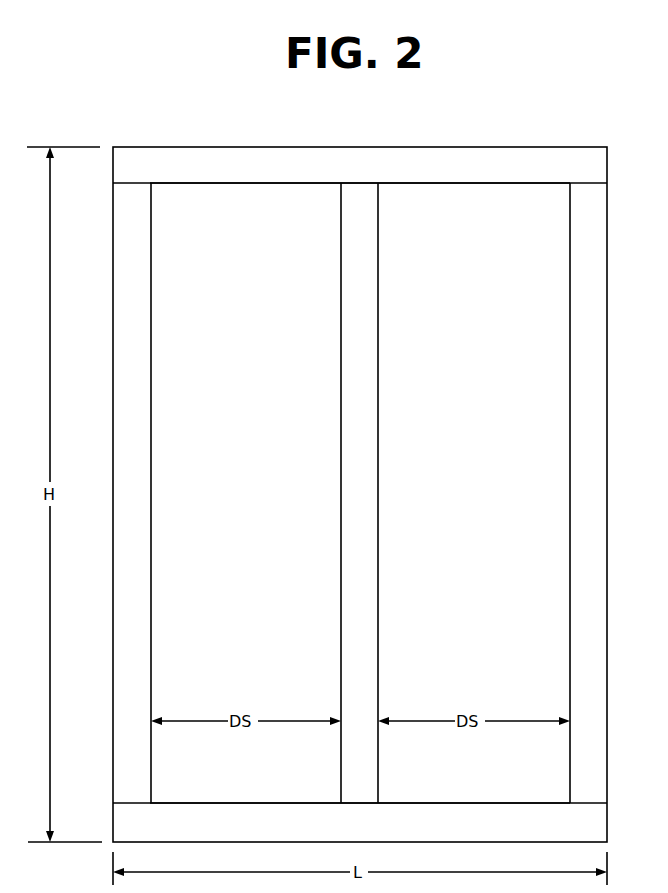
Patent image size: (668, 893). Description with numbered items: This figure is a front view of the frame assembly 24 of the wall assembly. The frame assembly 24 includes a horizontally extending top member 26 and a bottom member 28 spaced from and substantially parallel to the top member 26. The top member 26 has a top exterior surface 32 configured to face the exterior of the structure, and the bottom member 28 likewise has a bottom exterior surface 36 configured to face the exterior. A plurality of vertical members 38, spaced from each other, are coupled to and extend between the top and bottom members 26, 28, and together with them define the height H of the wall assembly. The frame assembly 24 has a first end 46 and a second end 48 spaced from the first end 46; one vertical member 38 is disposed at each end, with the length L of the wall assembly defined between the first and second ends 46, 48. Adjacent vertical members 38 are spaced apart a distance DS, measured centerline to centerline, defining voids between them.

The frame assembly 24 is at (549, 132).
The top member 26 is at (265, 152).
The bottom member 28 is at (416, 812).
The top exterior surface 32 is at (360, 171).
The bottom exterior surface 36 is at (360, 820).
The vertical members 38 is at (140, 460).
The first end 46 is at (97, 705).
The second end 48 is at (619, 707).